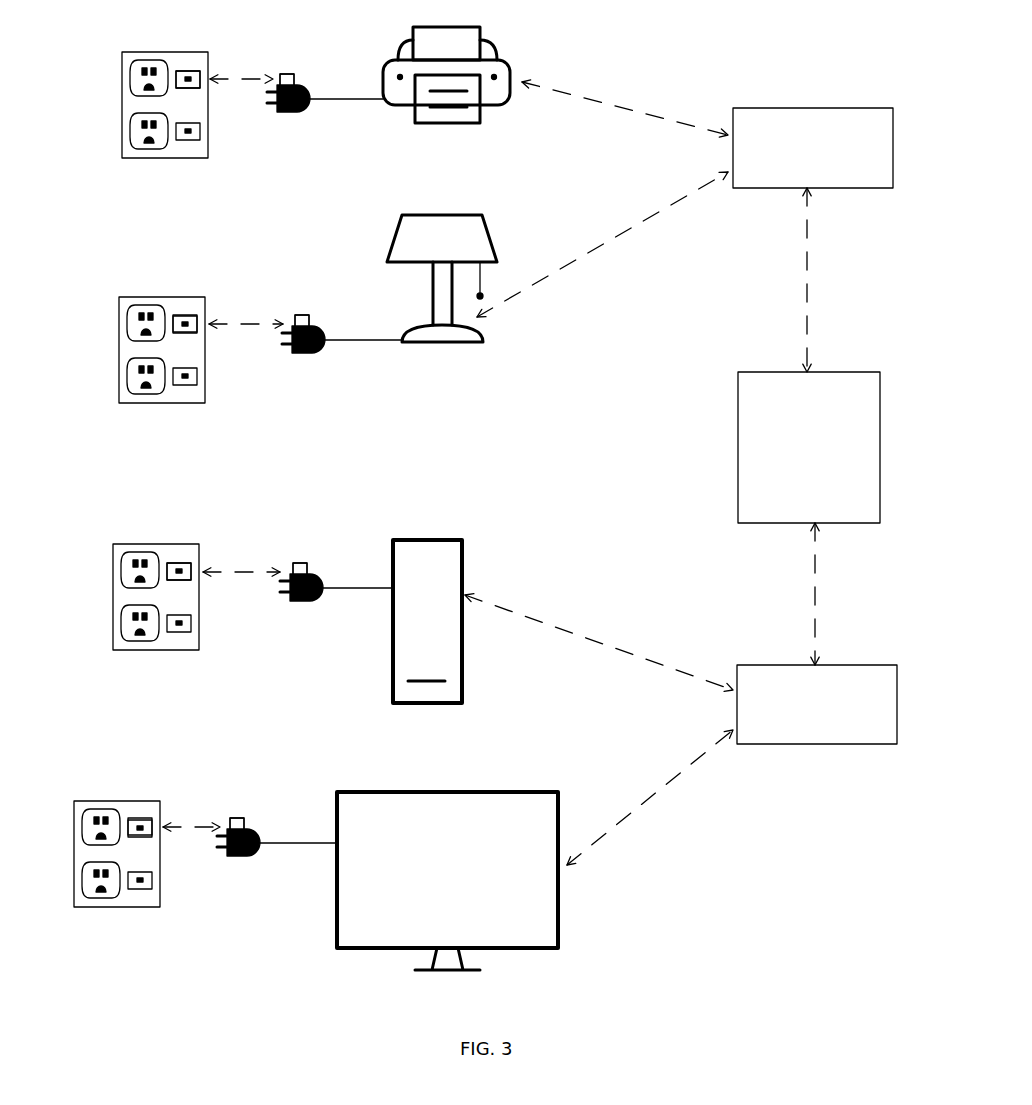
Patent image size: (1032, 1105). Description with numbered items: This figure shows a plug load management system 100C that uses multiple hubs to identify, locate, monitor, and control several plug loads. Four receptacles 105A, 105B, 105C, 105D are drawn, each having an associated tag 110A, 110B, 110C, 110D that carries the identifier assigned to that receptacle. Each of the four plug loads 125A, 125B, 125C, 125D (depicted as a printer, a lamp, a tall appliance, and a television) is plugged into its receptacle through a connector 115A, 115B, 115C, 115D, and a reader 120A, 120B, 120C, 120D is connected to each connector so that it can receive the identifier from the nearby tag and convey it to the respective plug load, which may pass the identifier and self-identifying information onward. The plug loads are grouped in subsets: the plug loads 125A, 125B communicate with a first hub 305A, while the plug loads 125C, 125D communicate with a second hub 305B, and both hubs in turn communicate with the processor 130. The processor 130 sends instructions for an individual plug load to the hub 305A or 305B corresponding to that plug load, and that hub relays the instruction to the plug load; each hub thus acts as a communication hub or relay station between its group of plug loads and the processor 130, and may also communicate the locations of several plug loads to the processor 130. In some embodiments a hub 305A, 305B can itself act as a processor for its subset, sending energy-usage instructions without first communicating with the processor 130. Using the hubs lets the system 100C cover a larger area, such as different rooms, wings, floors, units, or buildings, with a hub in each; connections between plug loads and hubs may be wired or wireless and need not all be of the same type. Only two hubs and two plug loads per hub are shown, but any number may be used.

The plug load management system 100C is at (860, 78).
The receptacle 105A is at (126, 81).
The receptacle 105B is at (127, 323).
The receptacle 105C is at (120, 572).
The receptacle 105D is at (80, 828).
The tag 110A is at (202, 75).
The tag 110B is at (197, 322).
The tag 110C is at (192, 570).
The tag 110D is at (152, 820).
The connector 115A is at (288, 112).
The connector 115B is at (299, 353).
The connector 115C is at (300, 600).
The connector 115D is at (239, 857).
The reader 120A is at (288, 73).
The reader 120B is at (299, 314).
The reader 120C is at (302, 562).
The reader 120D is at (237, 817).
The plug load 125A is at (446, 75).
The plug load 125B is at (442, 278).
The plug load 125C is at (427, 621).
The plug load 125D is at (447, 881).
The processor 130 is at (809, 426).
The hub 305A is at (685, 198).
The hub 305B is at (681, 729).